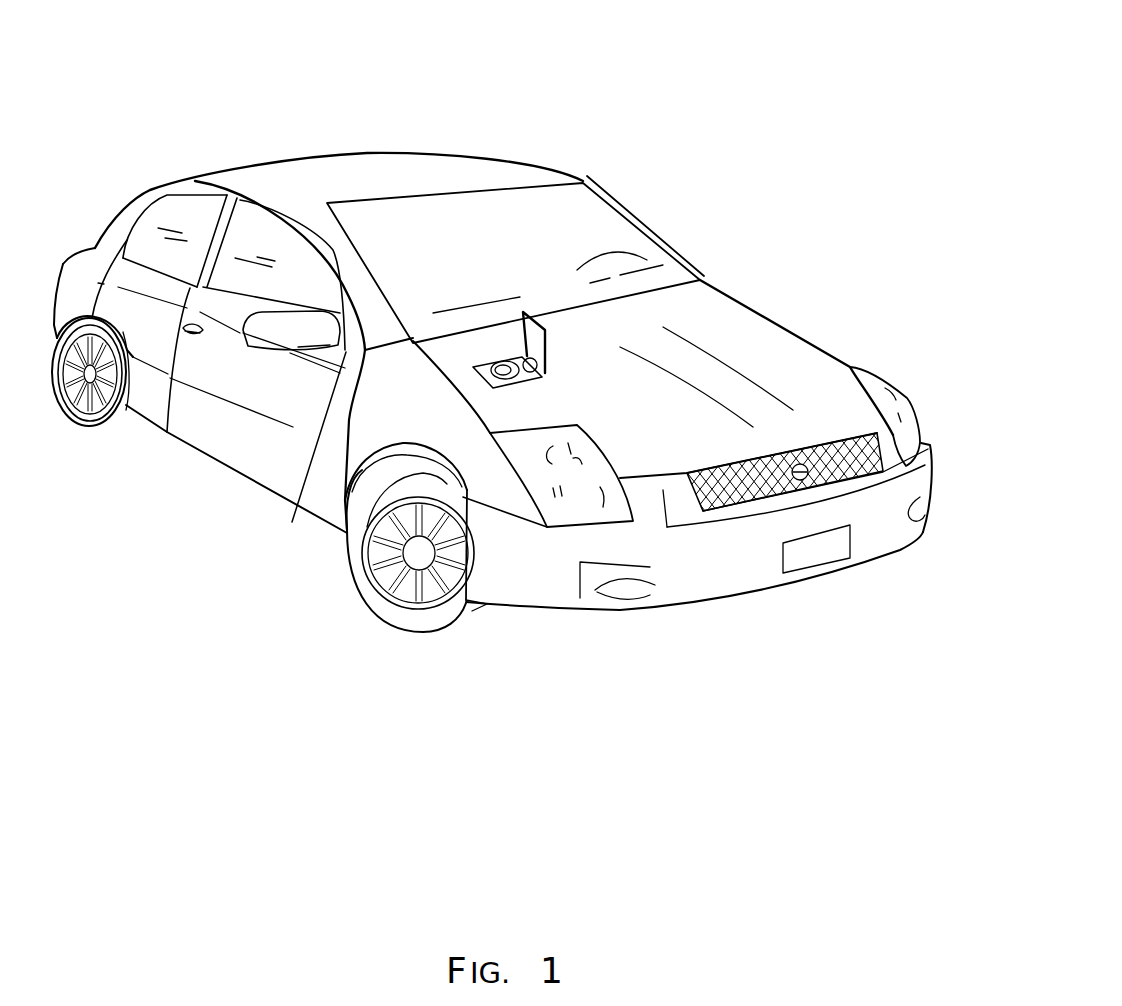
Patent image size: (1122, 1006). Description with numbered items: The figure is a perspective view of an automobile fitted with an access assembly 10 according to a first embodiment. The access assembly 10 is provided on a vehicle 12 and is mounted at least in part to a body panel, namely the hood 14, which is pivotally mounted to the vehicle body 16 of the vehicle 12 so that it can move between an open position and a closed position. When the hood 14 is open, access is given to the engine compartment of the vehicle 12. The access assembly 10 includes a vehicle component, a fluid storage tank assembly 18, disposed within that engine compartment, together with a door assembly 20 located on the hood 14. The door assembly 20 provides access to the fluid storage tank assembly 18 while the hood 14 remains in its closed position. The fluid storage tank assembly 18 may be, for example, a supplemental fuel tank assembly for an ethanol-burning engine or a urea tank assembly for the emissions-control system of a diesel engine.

The access assembly 10 is at (482, 268).
The vehicle 12 is at (770, 121).
The hood 14 is at (760, 335).
The vehicle body 16 is at (258, 167).
The fluid storage tank assembly 18 is at (463, 383).
The door assembly 20 is at (558, 339).